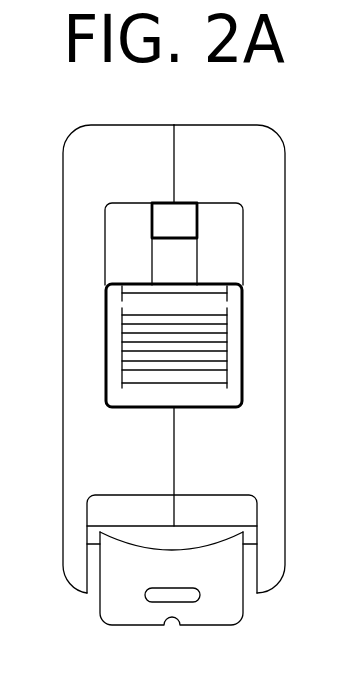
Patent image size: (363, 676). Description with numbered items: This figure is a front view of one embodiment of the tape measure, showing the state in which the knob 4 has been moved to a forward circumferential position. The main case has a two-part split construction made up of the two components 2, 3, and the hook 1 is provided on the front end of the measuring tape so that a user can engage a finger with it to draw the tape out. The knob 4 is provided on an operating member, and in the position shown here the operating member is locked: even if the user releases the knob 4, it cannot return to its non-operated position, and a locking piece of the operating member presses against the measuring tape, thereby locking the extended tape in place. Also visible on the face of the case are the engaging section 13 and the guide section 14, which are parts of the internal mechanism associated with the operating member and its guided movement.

The hook 1 is at (225, 608).
The main case component 2 is at (73, 472).
The main case component 3 is at (272, 473).
The knob 4 is at (202, 345).
The engaging section 13 is at (175, 220).
The guide section 14 is at (227, 247).